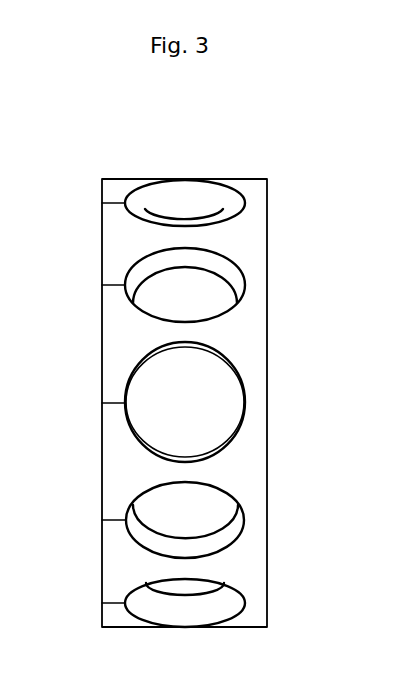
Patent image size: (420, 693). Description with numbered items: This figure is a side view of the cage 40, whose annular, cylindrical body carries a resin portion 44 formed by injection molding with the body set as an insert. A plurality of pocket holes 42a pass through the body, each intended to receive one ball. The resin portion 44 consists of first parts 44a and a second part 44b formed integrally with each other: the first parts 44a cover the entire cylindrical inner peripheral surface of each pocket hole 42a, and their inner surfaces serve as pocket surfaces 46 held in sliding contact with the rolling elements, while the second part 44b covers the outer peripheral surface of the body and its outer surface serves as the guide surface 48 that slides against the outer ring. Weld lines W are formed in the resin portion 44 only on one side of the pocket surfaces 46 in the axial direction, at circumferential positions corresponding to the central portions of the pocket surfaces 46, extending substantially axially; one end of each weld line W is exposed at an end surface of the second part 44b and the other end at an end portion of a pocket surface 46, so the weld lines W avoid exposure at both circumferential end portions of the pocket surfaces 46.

The cage 40 is at (186, 392).
The pocket holes 42a is at (210, 218).
The resin portion 44 is at (186, 403).
The first parts 44a is at (146, 198).
The second part 44b is at (232, 337).
The pocket surface 46 is at (178, 343).
The guide surface 48 is at (230, 468).
The weld lines W is at (114, 403).